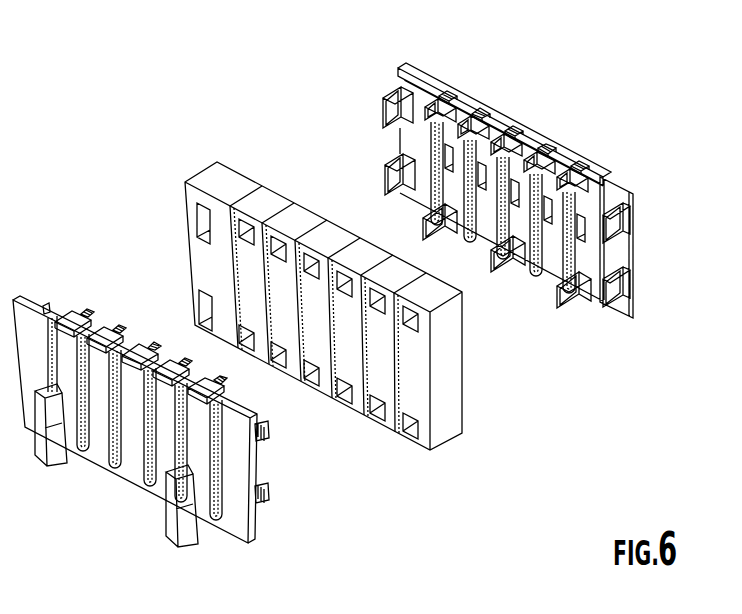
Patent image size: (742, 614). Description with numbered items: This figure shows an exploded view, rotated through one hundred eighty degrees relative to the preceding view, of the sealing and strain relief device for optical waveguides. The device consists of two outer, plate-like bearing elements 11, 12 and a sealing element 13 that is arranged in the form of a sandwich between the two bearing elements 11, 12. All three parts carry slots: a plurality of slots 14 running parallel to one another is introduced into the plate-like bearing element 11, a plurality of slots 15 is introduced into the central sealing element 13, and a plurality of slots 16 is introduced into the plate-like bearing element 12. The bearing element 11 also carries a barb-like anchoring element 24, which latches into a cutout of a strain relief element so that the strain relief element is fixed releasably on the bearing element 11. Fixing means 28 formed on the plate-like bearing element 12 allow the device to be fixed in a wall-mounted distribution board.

The plate-like bearing element 11 is at (640, 326).
The plate-like bearing element 12 is at (257, 540).
The sealing element 13 is at (452, 449).
The slots 14 is at (505, 111).
The slots 15 is at (312, 219).
The slots 16 is at (138, 339).
The barb-like anchoring element 24 is at (71, 10).
The fixing means 28 is at (187, 513).